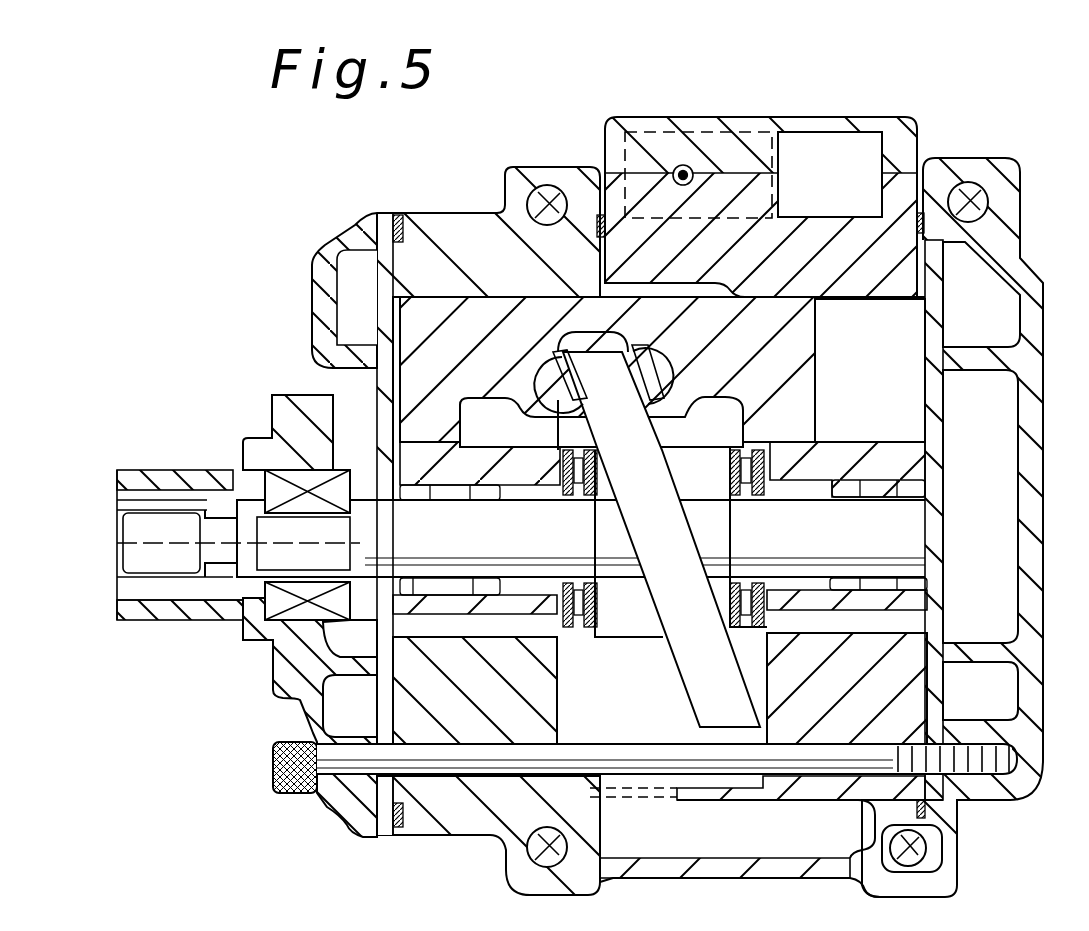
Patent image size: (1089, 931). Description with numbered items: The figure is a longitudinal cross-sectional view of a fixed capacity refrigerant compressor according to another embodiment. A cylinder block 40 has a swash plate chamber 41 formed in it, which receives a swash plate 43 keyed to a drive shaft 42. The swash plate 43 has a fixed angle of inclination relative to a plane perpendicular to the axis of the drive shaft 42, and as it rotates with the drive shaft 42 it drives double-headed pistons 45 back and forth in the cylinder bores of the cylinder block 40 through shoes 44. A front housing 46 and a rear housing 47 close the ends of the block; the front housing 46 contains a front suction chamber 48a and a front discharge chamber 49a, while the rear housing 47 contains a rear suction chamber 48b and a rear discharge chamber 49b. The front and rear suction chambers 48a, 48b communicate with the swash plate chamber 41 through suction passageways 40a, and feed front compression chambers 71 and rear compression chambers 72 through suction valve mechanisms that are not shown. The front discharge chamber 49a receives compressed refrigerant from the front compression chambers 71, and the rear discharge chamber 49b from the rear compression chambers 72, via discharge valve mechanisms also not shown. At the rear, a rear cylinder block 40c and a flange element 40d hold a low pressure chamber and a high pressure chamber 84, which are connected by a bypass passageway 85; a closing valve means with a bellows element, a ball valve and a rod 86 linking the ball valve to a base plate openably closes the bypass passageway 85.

The cylinder block 40 is at (458, 232).
The suction passageways 40a is at (545, 633).
The rear cylinder block 40c is at (598, 200).
The flange element 40d is at (640, 122).
The swash plate chamber 41 is at (643, 732).
The drive shaft 42 is at (130, 552).
The swash plate 43 is at (678, 660).
The shoes 44 is at (553, 383).
The double-headed pistons 45 is at (805, 393).
The front housing 46 is at (335, 248).
The rear housing 47 is at (1008, 232).
The front suction chamber 48a is at (343, 398).
The rear suction chamber 48b is at (1003, 489).
The front discharge chamber 49a is at (335, 705).
The rear discharge chamber 49b is at (1003, 707).
The front compression chambers 71 is at (412, 252).
The rear compression chambers 72 is at (892, 354).
The high pressure chamber 84 is at (838, 135).
The bypass passageway 85 is at (692, 170).
The rod 86 is at (681, 165).